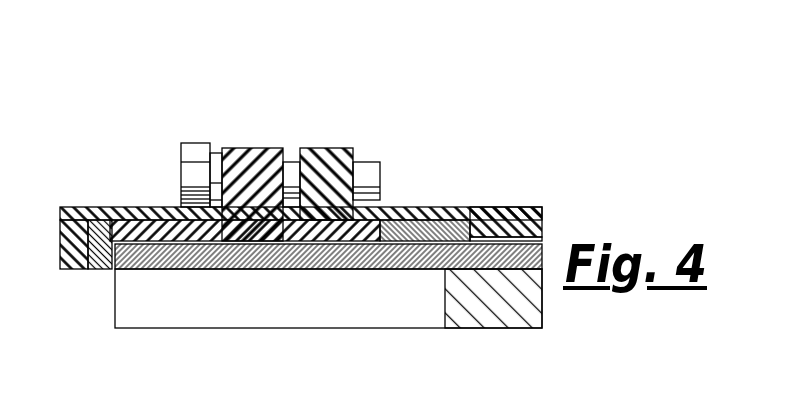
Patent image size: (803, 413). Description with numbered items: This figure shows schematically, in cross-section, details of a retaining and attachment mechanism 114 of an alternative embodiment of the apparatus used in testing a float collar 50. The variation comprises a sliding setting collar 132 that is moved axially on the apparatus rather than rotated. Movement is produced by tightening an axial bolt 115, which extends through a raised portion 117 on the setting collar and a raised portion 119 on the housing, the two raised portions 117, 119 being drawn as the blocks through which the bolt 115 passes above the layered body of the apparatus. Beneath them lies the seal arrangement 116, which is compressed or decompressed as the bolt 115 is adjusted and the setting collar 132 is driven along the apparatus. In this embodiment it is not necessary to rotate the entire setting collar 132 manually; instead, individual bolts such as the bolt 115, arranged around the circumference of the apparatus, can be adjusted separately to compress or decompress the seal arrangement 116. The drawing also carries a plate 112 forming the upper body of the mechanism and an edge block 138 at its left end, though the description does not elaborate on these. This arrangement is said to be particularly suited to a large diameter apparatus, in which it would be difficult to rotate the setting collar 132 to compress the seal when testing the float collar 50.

The float collar 50 is at (205, 260).
The carrier plate 112 is at (510, 207).
The retaining and attachment mechanism 114 is at (112, 168).
The axial bolt 115 is at (193, 153).
The seal arrangement 116 is at (408, 245).
The raised portion 117 is at (222, 183).
The raised portion 119 is at (352, 152).
The sliding setting collar 132 is at (270, 157).
The edge block 138 is at (60, 233).